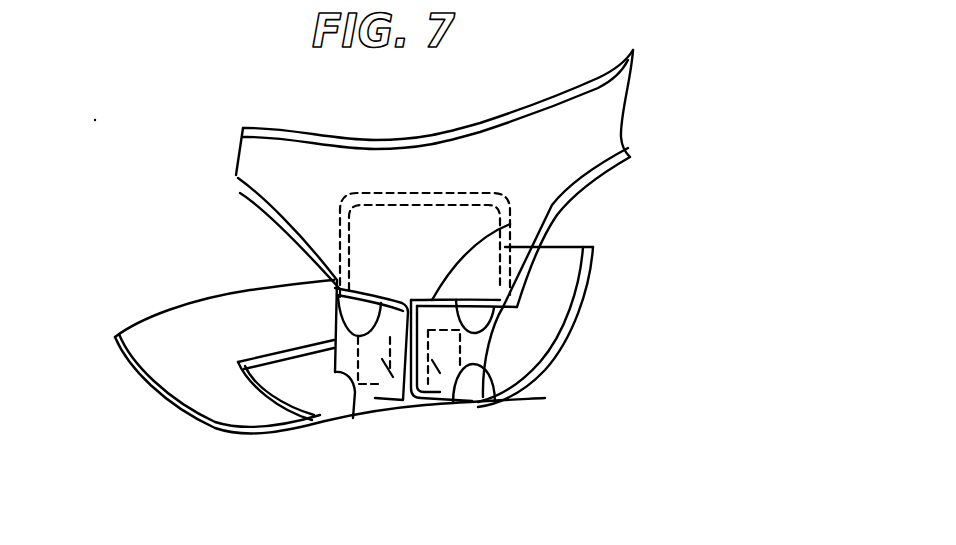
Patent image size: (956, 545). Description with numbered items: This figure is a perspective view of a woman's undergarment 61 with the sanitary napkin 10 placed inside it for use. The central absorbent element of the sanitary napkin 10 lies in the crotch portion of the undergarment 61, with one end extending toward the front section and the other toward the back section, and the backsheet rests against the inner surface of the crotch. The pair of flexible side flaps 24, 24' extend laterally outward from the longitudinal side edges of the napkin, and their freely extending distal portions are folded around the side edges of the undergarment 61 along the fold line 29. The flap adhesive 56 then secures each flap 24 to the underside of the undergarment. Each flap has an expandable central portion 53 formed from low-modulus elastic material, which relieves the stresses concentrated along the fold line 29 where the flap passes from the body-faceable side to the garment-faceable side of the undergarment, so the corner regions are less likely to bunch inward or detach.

The sanitary napkin 10 is at (288, 373).
The side flap 24 is at (527, 250).
The side flap 24' is at (409, 415).
The fold line 29 is at (334, 320).
The central portion 53 is at (483, 350).
The flap adhesive 56 is at (403, 407).
The undergarment 61 is at (632, 157).